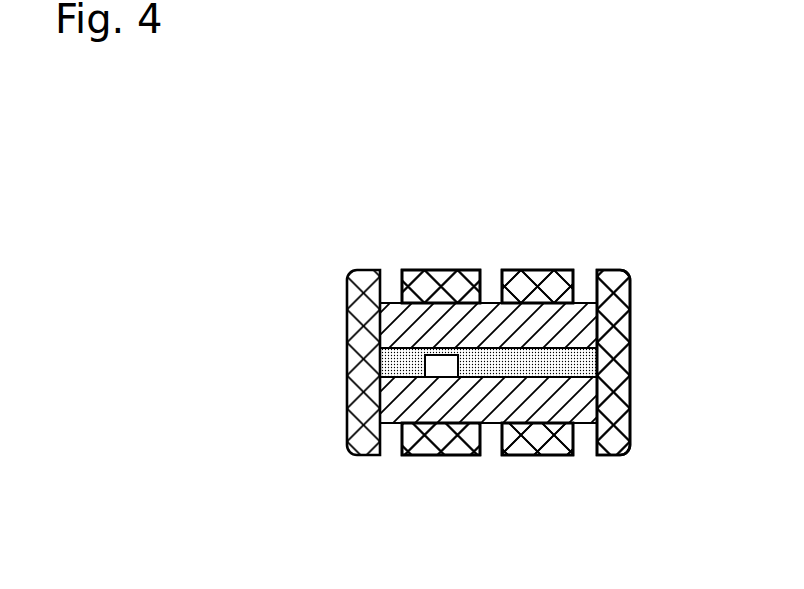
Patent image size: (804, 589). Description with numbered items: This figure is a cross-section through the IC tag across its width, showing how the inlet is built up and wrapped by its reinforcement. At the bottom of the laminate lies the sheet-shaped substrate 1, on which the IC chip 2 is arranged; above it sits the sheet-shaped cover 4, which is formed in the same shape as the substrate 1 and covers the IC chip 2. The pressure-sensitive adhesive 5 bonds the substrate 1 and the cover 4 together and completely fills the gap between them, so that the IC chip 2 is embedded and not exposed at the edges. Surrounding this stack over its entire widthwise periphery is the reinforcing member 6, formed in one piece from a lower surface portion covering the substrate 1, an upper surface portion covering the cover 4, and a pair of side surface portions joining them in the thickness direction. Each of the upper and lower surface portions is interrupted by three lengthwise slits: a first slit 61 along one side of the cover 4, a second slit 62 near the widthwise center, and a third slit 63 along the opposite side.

The substrate 1 is at (392, 410).
The IC chip 2 is at (443, 365).
The cover 4 is at (387, 327).
The pressure-sensitive adhesive 5 is at (575, 368).
The reinforcing member 6 is at (632, 323).
The first slit 61 is at (384, 280).
The second slit 62 is at (492, 280).
The third slit 63 is at (592, 283).